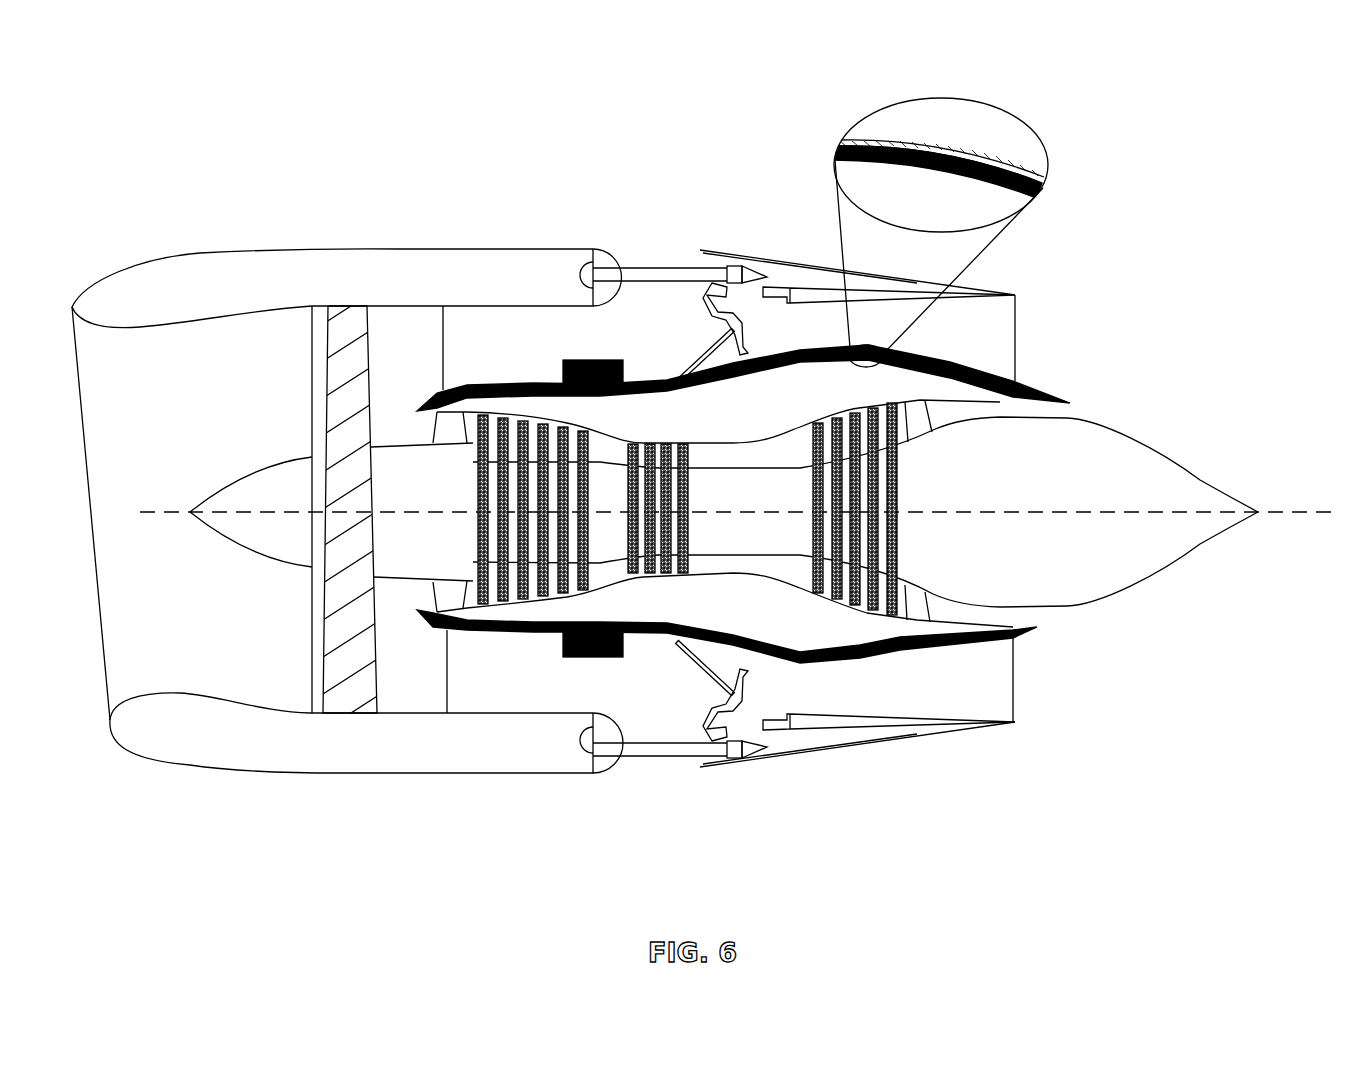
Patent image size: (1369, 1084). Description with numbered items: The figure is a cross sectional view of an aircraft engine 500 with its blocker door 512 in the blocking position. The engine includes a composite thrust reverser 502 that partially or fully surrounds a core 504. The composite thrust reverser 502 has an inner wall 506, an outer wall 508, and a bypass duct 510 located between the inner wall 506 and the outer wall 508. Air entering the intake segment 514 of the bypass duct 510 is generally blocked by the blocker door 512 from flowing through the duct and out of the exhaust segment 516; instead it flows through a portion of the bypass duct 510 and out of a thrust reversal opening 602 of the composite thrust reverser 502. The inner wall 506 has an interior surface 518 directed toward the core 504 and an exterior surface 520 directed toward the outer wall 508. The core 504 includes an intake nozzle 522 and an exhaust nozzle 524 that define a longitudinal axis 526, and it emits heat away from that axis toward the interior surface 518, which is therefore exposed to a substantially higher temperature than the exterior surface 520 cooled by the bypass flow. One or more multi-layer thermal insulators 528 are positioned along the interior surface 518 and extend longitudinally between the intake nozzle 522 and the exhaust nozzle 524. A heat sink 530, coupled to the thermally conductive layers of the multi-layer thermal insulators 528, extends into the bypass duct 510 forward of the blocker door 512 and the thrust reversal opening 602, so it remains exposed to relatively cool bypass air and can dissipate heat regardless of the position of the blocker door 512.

The aircraft engine 500 is at (1185, 100).
The composite thrust reverser 502 is at (720, 245).
The core 504 is at (717, 553).
The inner wall 506 is at (923, 147).
The outer wall 508 is at (807, 238).
The bypass duct 510 is at (660, 307).
The blocker door 512 is at (717, 320).
The intake segment 514 is at (457, 333).
The exhaust segment 516 is at (1017, 363).
The interior surface 518 is at (1023, 170).
The exterior surface 520 is at (987, 157).
The intake nozzle 522 is at (457, 597).
The exhaust nozzle 524 is at (920, 610).
The longitudinal axis 526 is at (178, 505).
The multi-layer thermal insulator 528 is at (523, 385).
The heat sink 530 is at (580, 360).
The thrust reversal opening 602 is at (640, 262).